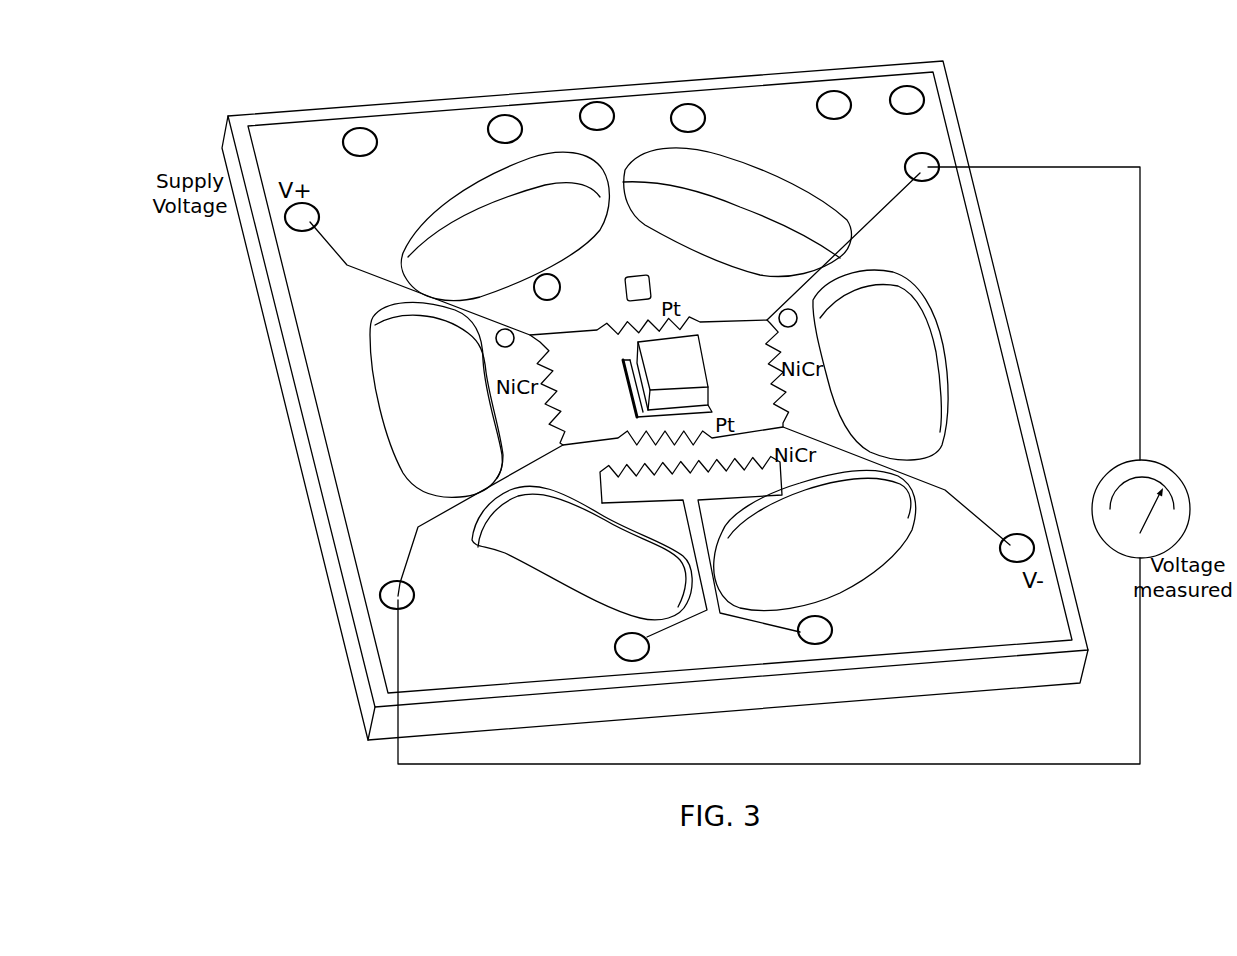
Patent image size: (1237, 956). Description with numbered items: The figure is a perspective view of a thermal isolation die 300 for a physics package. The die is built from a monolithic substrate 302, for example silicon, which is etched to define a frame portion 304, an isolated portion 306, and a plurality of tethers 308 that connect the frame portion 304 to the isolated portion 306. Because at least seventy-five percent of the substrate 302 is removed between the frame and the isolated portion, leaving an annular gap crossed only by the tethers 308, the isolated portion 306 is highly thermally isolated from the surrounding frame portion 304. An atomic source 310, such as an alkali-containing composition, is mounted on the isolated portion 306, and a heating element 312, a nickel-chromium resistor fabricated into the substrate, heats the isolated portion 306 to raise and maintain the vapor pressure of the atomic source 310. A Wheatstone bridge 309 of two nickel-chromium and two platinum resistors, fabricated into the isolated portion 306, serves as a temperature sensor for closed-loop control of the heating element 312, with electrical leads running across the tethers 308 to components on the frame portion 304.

The thermal isolation die 300 is at (1015, 117).
The monolithic substrate 302 is at (345, 118).
The frame portion 304 is at (362, 209).
The isolated portion 306 is at (652, 277).
The tethers 308 is at (640, 209).
The Wheatstone bridge 309 is at (594, 317).
The atomic source 310 is at (690, 345).
The heating element 312 is at (780, 462).